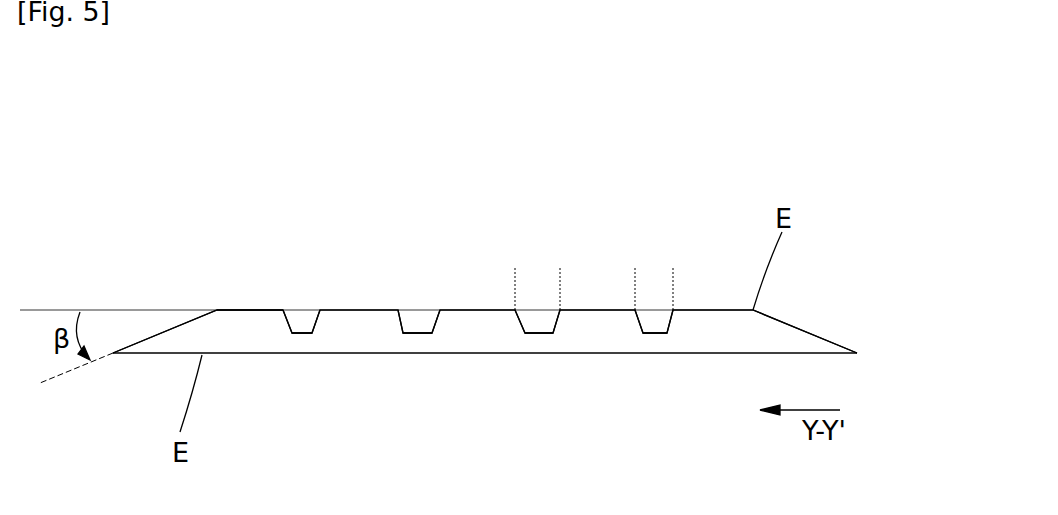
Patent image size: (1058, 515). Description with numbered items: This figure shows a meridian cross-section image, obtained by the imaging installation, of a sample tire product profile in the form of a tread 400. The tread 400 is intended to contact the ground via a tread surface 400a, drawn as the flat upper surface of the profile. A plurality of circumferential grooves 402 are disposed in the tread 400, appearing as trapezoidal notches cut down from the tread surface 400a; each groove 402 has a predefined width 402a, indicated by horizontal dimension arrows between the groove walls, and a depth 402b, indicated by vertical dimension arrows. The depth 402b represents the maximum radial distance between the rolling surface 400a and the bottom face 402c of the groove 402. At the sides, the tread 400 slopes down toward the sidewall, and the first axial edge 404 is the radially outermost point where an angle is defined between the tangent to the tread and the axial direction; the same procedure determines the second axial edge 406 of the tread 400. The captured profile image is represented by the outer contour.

The tread 400 is at (850, 215).
The tread surface 400a is at (243, 310).
The circumferential grooves 402 is at (286, 318).
The width 402a is at (515, 280).
The depth 402b is at (305, 278).
The bottom face 402c is at (294, 334).
The first axial edge 404 is at (172, 330).
The second axial edge 406 is at (792, 323).